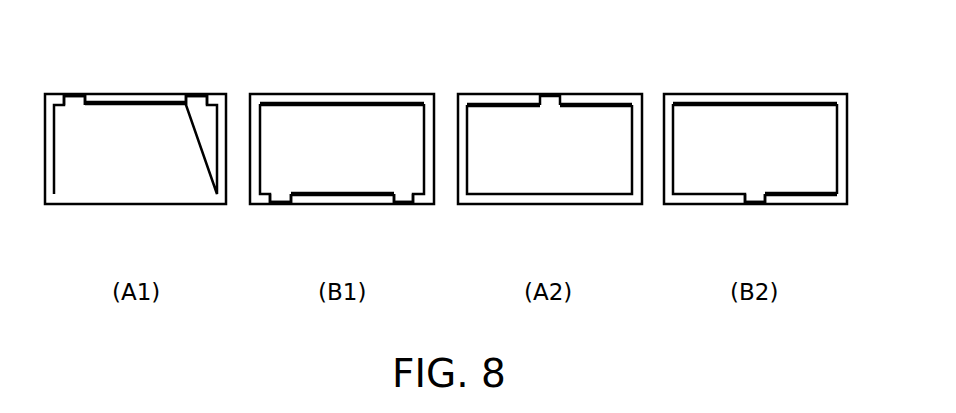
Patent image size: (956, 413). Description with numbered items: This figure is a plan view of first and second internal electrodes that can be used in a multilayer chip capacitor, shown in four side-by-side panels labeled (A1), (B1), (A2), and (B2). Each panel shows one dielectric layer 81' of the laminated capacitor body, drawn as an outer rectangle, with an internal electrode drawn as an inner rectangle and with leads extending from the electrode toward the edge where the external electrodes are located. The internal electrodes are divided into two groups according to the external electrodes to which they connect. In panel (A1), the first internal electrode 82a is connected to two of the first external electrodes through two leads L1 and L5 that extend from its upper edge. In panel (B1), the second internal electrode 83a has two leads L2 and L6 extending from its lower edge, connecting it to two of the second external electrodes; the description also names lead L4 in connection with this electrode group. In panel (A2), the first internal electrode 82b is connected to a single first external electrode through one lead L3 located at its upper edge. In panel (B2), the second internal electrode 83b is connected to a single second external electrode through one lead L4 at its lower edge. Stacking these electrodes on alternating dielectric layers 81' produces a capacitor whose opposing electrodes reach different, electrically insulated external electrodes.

The dielectric layer 81' is at (461, 68).
The first internal electrode 82a is at (75, 183).
The first internal electrode 82b is at (548, 185).
The second internal electrode 83a is at (365, 185).
The second internal electrode 83b is at (805, 185).
The lead L1 is at (80, 94).
The lead L2 is at (282, 204).
The lead L3 is at (550, 94).
The lead L4 is at (755, 204).
The lead L5 is at (193, 94).
The lead L6 is at (400, 204).